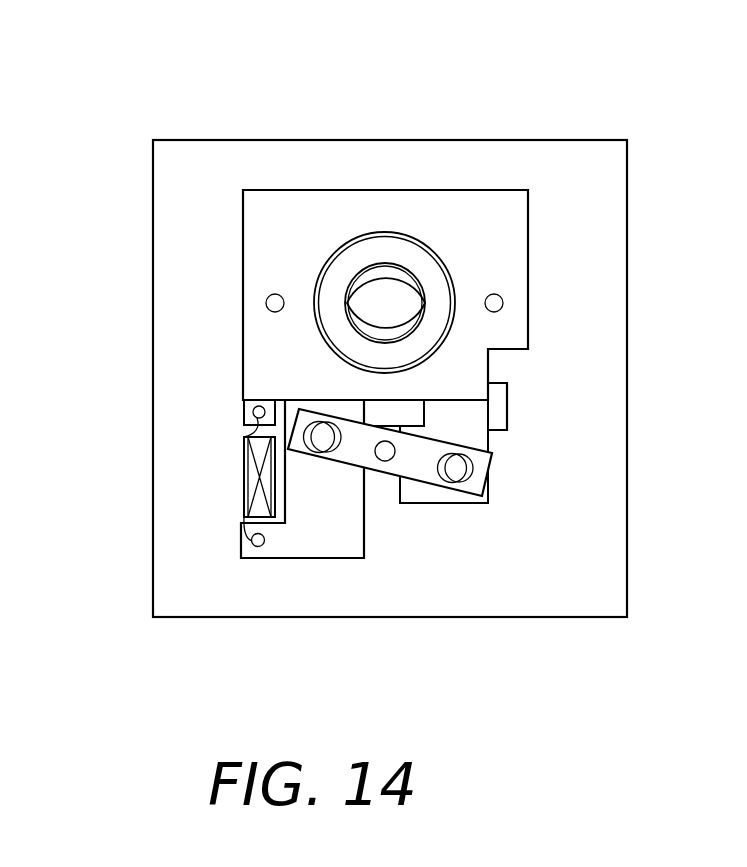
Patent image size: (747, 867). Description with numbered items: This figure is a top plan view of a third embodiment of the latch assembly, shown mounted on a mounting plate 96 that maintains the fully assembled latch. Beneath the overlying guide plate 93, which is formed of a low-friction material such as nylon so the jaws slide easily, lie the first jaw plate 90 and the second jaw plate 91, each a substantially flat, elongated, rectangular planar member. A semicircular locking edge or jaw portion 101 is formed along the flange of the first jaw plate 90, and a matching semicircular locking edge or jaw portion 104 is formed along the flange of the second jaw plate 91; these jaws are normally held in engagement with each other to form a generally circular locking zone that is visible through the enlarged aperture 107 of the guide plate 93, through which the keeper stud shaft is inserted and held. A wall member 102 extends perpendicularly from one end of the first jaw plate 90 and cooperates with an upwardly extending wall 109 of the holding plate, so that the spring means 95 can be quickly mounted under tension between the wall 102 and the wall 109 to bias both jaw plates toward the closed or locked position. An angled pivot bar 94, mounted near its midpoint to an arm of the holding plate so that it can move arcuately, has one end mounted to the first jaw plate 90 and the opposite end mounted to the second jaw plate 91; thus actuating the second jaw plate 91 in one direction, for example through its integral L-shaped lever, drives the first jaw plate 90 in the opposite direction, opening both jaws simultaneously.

The first jaw plate 90 is at (332, 522).
The second jaw plate 91 is at (483, 422).
The guide plate 93 is at (478, 212).
The pivot bar 94 is at (386, 472).
The spring means 95 is at (242, 478).
The mounting plate 96 is at (583, 517).
The locking edge or jaw portion 101 is at (382, 333).
The wall member 102 is at (280, 546).
The locking edge or jaw portion 104 is at (370, 278).
The enlarged aperture 107 is at (400, 266).
The wall 109 is at (252, 411).